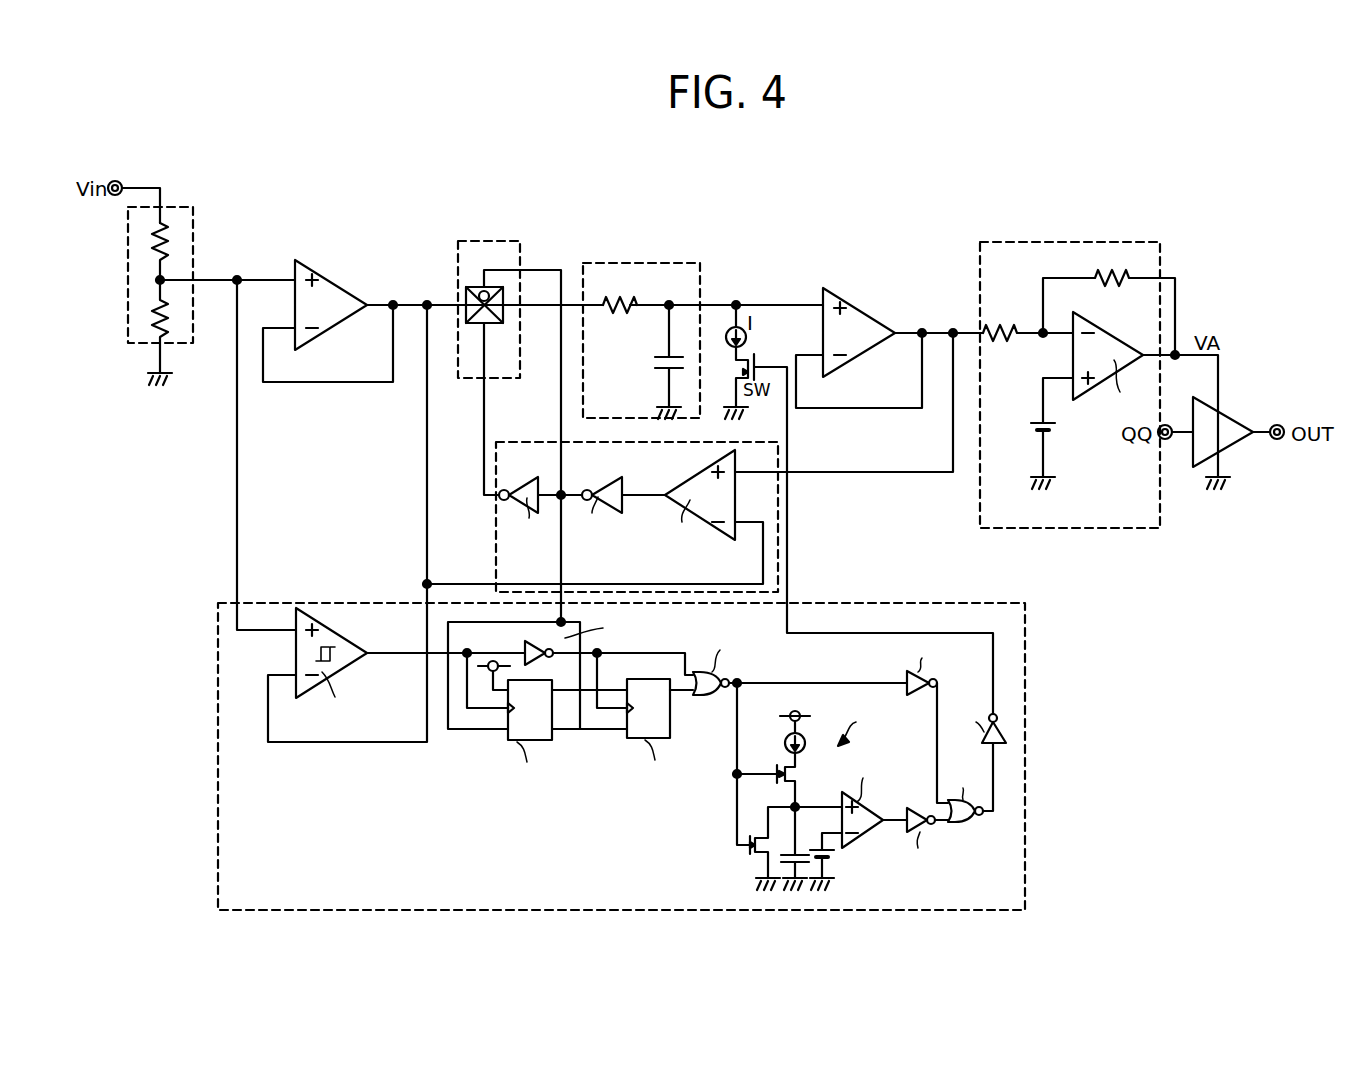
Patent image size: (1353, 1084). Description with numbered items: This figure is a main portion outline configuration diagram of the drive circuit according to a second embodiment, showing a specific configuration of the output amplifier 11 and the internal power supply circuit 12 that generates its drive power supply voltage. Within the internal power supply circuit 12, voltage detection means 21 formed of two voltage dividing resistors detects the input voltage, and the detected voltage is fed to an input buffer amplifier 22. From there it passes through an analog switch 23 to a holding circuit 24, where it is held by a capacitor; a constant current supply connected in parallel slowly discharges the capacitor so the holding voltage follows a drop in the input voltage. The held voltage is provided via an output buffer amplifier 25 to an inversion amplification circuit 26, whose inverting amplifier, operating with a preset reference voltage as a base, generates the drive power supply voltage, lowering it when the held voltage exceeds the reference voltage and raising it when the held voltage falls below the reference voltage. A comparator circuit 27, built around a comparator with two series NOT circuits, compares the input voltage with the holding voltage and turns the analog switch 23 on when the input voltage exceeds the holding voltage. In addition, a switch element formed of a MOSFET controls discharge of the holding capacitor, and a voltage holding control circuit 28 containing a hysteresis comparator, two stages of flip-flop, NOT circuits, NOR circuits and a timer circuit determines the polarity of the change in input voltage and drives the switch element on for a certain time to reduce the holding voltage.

The output amplifier 11 is at (1222, 428).
The internal power supply circuit 12 is at (794, 232).
The voltage detection means 21 is at (186, 266).
The input buffer amplifier 22 is at (322, 290).
The analog switch 23 is at (458, 275).
The holding circuit 24 is at (690, 286).
The output buffer amplifier 25 is at (862, 305).
The inversion amplification circuit 26 is at (1000, 277).
The comparator circuit 27 is at (496, 513).
The voltage holding control circuit 28 is at (1015, 620).